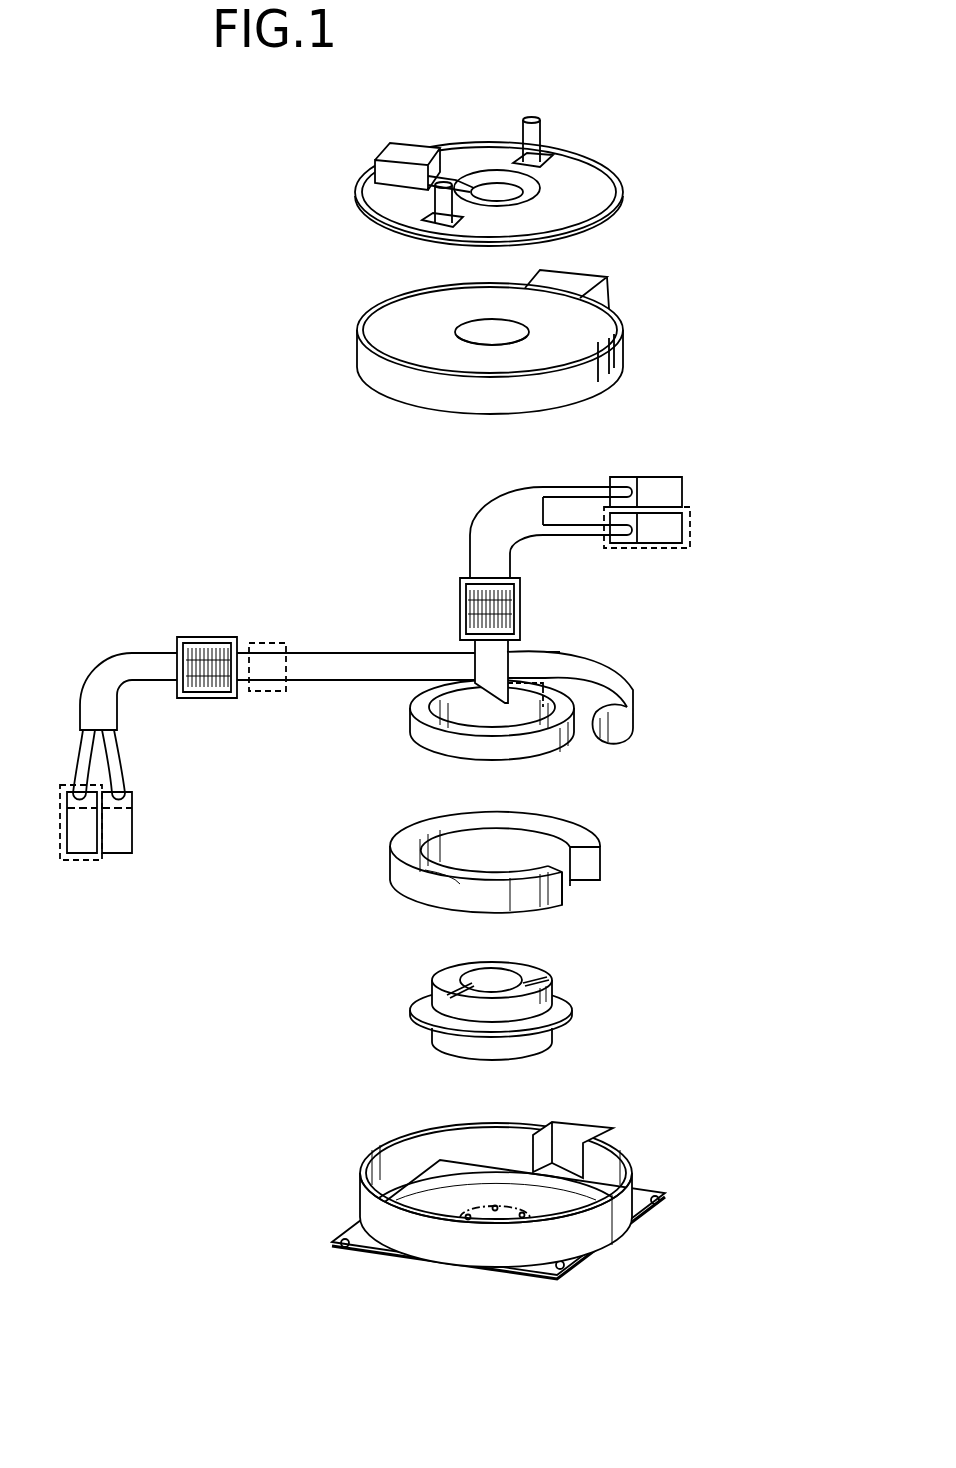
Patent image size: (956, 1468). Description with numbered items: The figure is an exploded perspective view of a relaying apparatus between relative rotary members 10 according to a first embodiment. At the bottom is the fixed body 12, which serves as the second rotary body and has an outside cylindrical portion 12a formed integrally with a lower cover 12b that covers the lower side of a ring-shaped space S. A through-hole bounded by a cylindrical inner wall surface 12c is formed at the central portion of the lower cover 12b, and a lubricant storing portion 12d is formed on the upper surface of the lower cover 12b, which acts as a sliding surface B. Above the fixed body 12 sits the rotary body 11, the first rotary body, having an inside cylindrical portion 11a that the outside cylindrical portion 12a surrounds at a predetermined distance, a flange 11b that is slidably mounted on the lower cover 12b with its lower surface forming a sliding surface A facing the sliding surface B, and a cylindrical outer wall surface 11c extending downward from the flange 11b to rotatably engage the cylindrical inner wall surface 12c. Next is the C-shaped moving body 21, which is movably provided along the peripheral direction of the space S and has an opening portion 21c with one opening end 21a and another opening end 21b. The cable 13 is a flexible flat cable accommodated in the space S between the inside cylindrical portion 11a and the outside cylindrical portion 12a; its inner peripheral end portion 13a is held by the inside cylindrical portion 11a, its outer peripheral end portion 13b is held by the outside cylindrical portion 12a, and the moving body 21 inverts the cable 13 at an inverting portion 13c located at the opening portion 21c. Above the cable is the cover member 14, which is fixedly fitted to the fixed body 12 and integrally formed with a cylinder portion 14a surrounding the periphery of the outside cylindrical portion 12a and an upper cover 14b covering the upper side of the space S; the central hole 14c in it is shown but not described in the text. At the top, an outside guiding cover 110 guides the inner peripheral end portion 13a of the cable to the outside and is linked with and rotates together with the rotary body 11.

The relaying apparatus between relative rotary members 10 is at (622, 118).
The outside guiding cover 110 is at (629, 192).
The cover member 14 is at (634, 345).
The cylinder portion 14a is at (605, 378).
The upper cover 14b is at (602, 323).
The center hole of core 14c is at (505, 336).
The cable 13 is at (647, 685).
The inner peripheral end portion 13a is at (533, 673).
The outer peripheral end portion 13b is at (300, 652).
The inverting portion 13c is at (617, 735).
The moving body 21 is at (566, 814).
The one opening end 21a is at (592, 859).
The other opening end 21b is at (565, 898).
The opening portion 21c is at (577, 888).
The rotary body 11 is at (592, 1010).
The inside cylindrical portion 11a is at (558, 993).
The flange 11b is at (563, 1020).
The cylindrical outer wall surface 11c is at (545, 1045).
The sliding surface A is at (413, 1028).
The fixed body 12 is at (354, 1210).
The outside cylindrical portion 12a is at (358, 1180).
The lower cover 12b is at (420, 1198).
The cylindrical inner wall surface 12c is at (490, 1212).
The lubricant storing portion 12d is at (522, 1212).
The ring-shaped space S is at (420, 1155).
The sliding surface B is at (524, 1218).